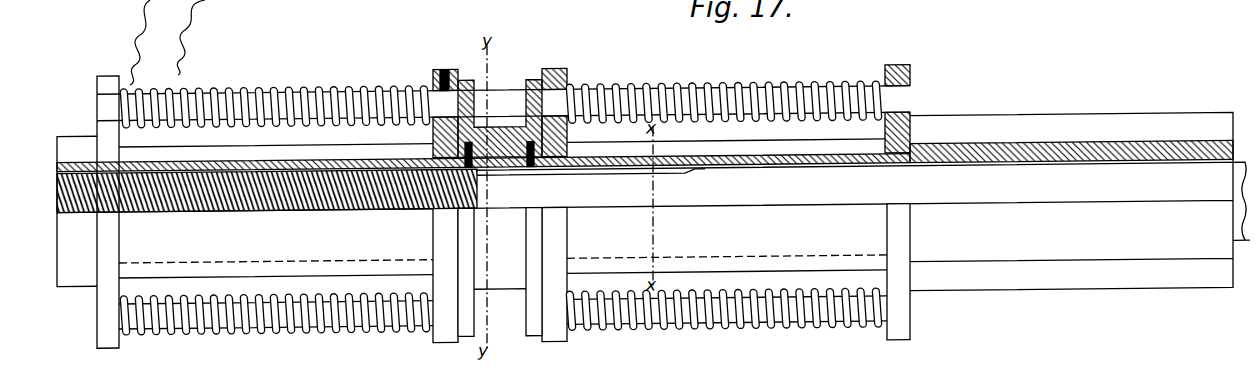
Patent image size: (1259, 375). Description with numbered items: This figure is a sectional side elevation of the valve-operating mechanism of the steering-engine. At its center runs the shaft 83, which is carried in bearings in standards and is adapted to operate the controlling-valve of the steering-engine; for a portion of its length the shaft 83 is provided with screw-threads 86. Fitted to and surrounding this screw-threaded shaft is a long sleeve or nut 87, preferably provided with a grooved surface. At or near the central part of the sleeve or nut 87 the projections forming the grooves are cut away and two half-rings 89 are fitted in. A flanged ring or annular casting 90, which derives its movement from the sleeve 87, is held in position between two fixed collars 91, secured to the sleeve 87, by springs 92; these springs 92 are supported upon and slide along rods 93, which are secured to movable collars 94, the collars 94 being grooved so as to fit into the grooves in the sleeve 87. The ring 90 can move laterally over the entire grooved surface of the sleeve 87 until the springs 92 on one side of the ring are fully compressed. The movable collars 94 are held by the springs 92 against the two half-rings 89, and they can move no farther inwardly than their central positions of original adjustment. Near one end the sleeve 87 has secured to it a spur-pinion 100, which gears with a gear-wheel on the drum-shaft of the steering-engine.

The shaft 83 is at (1245, 163).
The screw-threads 86 is at (182, 209).
The sleeve or nut 87 is at (1112, 154).
The half-rings 89 is at (515, 123).
The flanged ring 90 is at (492, 125).
The fixed collars 91 is at (898, 64).
The springs 92 is at (652, 88).
The rods 93 is at (287, 98).
The movable collars 94 is at (437, 69).
The spur-pinion 100 is at (645, 205).